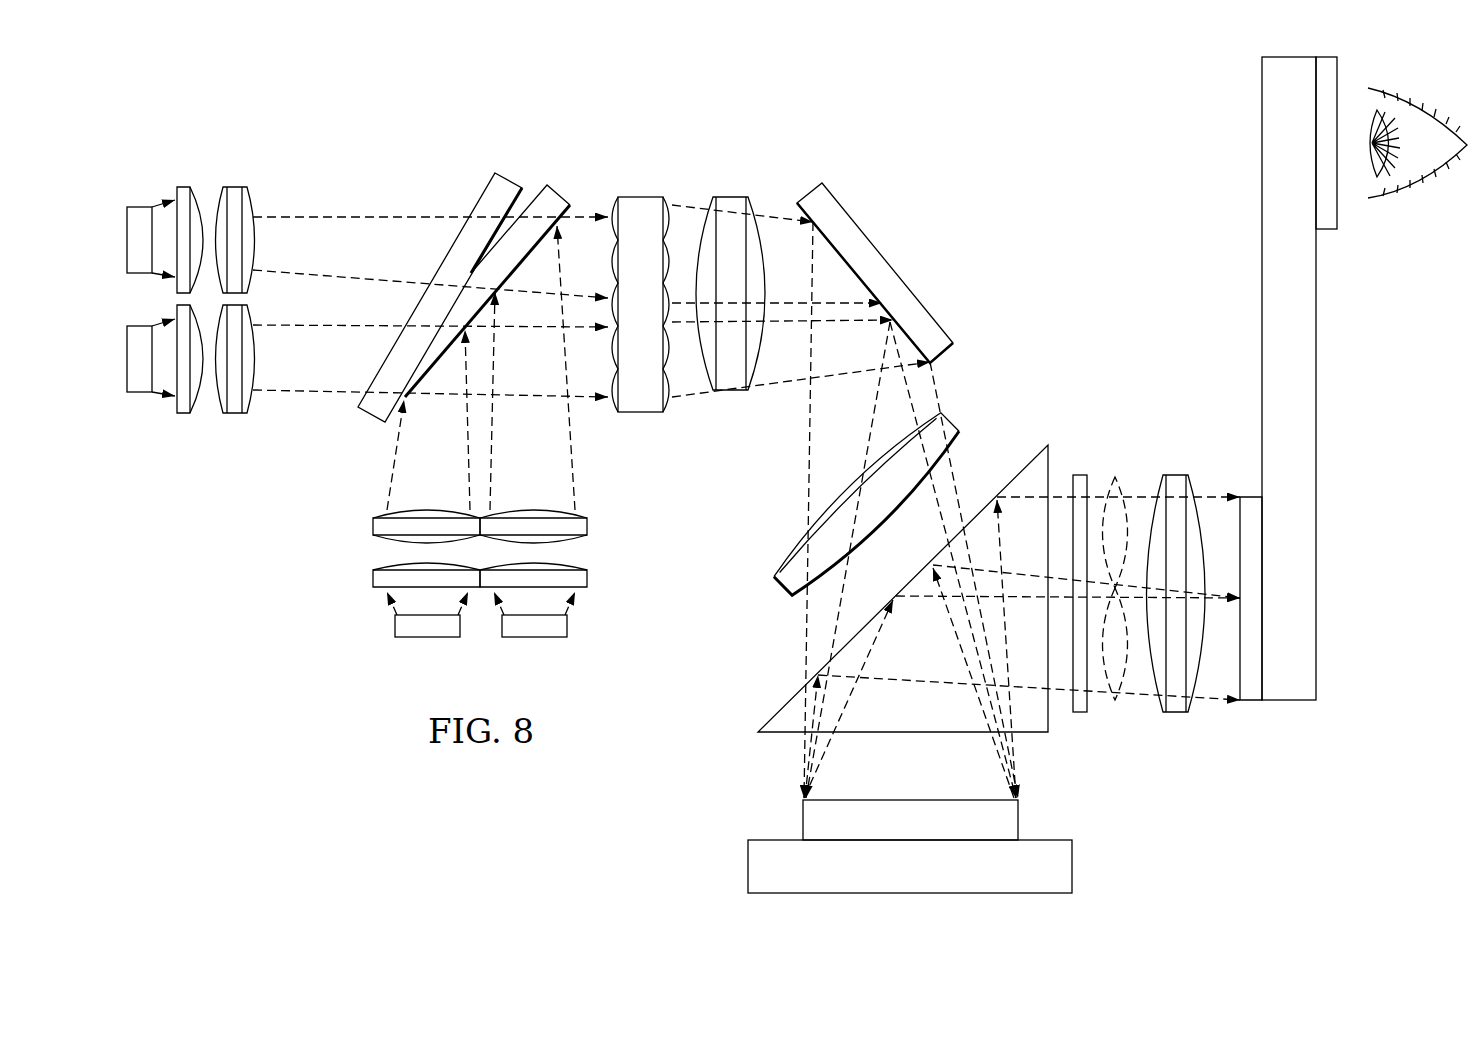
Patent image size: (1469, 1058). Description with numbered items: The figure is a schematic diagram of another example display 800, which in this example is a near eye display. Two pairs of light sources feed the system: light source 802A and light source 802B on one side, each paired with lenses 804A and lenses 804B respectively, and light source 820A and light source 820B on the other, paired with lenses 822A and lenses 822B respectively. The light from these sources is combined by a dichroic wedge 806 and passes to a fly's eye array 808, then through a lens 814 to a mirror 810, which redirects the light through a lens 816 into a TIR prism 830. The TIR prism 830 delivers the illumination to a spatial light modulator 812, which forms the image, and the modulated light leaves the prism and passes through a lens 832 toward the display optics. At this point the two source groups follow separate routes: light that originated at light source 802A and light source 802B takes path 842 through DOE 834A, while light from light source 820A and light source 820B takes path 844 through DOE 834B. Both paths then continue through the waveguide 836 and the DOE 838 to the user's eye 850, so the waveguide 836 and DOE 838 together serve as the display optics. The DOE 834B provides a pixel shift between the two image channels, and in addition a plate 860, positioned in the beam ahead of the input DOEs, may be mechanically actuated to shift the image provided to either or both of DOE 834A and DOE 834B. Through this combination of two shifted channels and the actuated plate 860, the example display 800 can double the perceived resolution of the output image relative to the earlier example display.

The display 800 is at (394, 120).
The light source 802A is at (140, 207).
The light source 802B is at (140, 392).
The lenses 804A is at (254, 167).
The lenses 804B is at (254, 428).
The dichroic wedge 806 is at (508, 174).
The fly's eye array 808 is at (640, 197).
The mirror 810 is at (805, 195).
The spatial light modulator 812 is at (1072, 865).
The lens 814 is at (733, 197).
The lens 816 is at (955, 426).
The light source 820A is at (428, 638).
The light source 820B is at (535, 638).
The lenses 822A is at (355, 510).
The lenses 822B is at (605, 510).
The TIR prism 830 is at (780, 735).
The lens 832 is at (1175, 714).
The DOE 834A is at (1255, 648).
The DOE 834B is at (1255, 548).
The waveguide 836 is at (1317, 375).
The DOE 838 is at (1338, 207).
The path 842 is at (1117, 702).
The path 844 is at (1117, 477).
The user's eye 850 is at (1425, 118).
The plate 860 is at (1080, 474).